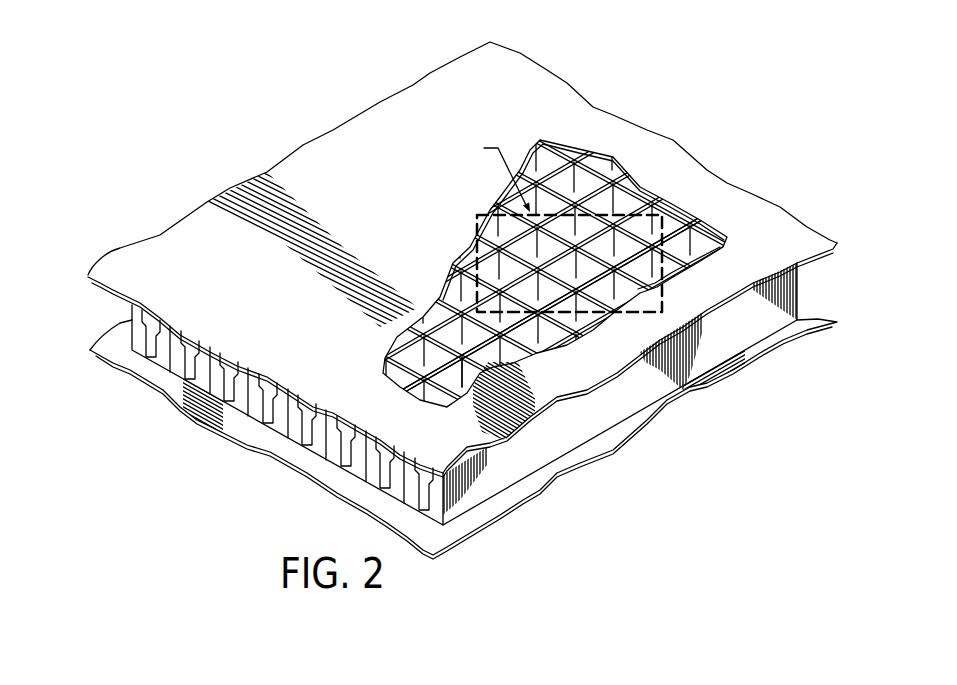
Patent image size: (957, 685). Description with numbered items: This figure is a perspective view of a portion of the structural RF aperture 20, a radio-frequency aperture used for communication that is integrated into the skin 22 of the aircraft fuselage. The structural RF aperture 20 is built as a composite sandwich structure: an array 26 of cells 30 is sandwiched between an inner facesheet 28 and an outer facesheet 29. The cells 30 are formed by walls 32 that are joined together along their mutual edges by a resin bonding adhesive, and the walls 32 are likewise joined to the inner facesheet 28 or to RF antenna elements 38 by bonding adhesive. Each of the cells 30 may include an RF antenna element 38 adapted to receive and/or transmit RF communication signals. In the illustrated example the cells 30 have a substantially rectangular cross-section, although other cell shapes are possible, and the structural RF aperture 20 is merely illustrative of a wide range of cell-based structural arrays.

The structural RF aperture 20 is at (683, 178).
The skin 22 is at (780, 98).
The array 26 is at (803, 282).
The inner facesheet 28 is at (133, 365).
The outer facesheet 29 is at (392, 214).
The cells 30 is at (442, 333).
The walls 32 is at (456, 345).
The RF antenna elements 38 is at (296, 436).